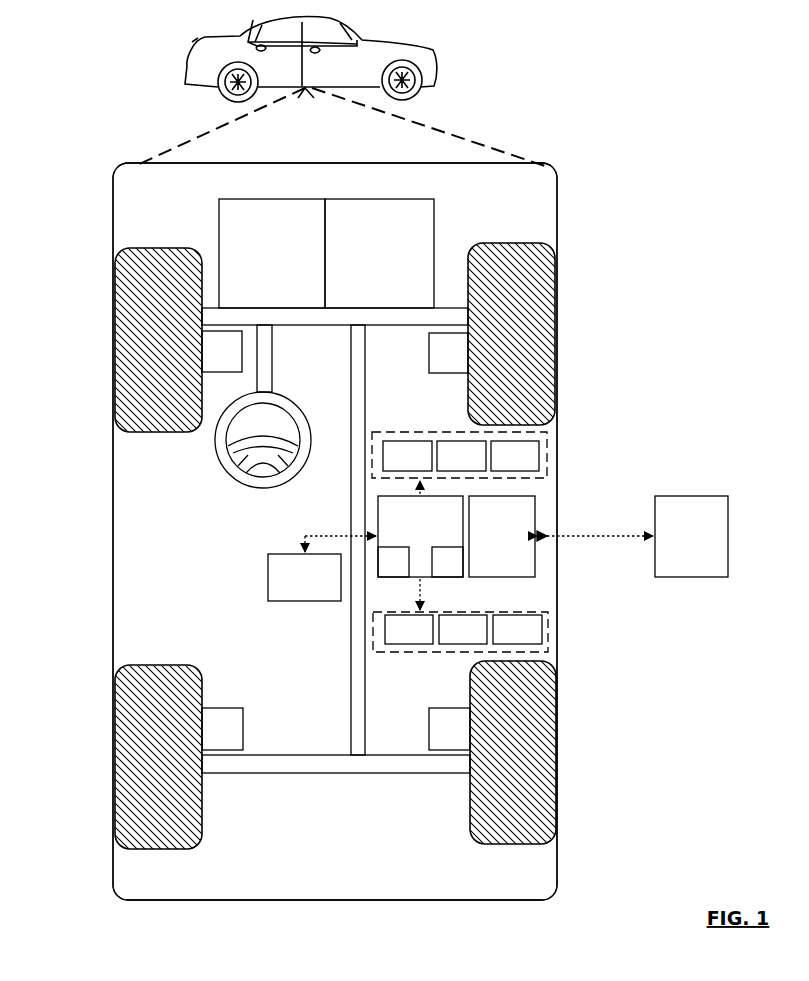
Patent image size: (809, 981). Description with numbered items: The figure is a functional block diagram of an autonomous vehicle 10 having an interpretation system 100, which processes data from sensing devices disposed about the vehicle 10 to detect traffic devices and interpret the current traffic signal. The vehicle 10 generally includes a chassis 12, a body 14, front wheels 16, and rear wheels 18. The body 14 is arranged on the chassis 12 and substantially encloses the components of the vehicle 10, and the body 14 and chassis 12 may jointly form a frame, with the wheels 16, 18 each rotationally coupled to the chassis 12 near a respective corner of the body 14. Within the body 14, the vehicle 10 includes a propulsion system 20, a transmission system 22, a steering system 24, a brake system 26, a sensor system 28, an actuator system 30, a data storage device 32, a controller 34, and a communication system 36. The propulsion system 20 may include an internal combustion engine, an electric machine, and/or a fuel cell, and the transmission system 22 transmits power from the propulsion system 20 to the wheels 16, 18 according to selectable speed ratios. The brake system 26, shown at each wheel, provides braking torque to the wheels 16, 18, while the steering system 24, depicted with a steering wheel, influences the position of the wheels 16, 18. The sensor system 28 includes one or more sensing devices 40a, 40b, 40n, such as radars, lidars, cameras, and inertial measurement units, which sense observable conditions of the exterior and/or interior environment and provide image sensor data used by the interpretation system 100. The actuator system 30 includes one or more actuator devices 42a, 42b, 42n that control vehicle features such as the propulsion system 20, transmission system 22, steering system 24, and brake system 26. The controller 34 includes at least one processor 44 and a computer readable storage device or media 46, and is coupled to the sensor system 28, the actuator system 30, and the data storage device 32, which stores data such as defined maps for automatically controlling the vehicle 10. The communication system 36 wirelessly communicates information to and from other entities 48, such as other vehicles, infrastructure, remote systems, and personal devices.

The vehicle 10 is at (187, 68).
The interpretation system 100 is at (580, 175).
The body 14 is at (113, 518).
The chassis 12 is at (350, 692).
The front wheels 16 is at (156, 248).
The rear wheels 18 is at (172, 849).
The propulsion system 20 is at (272, 253).
The transmission system 22 is at (379, 253).
The steering system 24 is at (294, 349).
The brake system 26 is at (336, 540).
The sensor system 28 is at (388, 433).
The actuator system 30 is at (420, 653).
The data storage device 32 is at (304, 577).
The controller 34 is at (420, 536).
The communication system 36 is at (502, 536).
The sensing device 40a is at (407, 456).
The sensing device 40b is at (461, 456).
The sensing device 40n is at (515, 456).
The actuator device 42a is at (409, 629).
The actuator device 42b is at (463, 629).
The actuator device 42n is at (517, 629).
The processor 44 is at (393, 562).
The computer readable storage device or media 46 is at (447, 562).
The other entities 48 is at (691, 536).